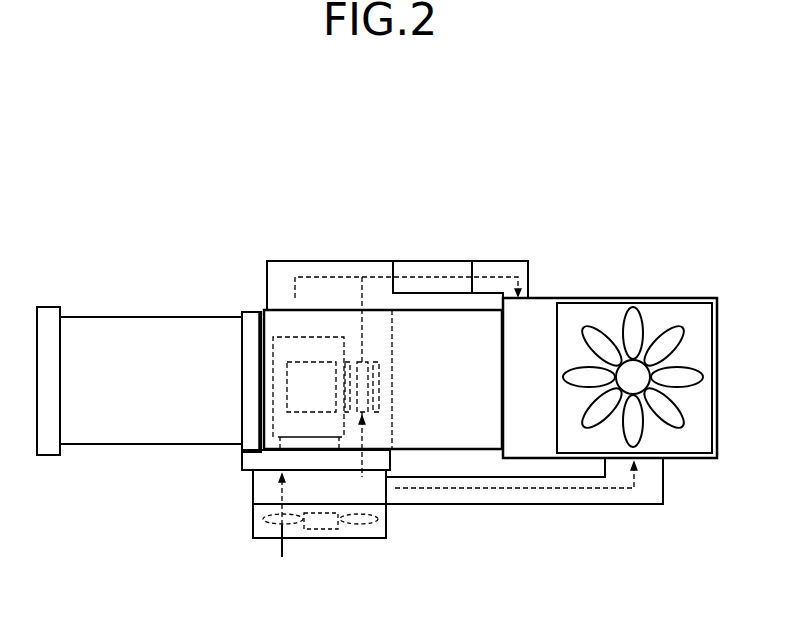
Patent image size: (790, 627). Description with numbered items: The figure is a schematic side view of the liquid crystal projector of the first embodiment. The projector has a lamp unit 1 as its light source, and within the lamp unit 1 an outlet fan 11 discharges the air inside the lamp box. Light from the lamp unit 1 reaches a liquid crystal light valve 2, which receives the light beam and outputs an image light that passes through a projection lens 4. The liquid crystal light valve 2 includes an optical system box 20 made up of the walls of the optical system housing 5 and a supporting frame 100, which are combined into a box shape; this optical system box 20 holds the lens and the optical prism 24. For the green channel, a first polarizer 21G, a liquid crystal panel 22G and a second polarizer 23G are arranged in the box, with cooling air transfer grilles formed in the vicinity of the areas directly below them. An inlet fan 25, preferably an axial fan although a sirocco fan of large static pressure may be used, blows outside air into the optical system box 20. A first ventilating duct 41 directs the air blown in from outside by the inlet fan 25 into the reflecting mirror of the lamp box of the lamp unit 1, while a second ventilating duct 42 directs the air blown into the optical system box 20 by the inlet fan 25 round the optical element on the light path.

The lamp unit 1 is at (617, 294).
The liquid crystal light valve 2 is at (320, 331).
The projection lens 4 is at (108, 323).
The housing of the optical system 5 is at (462, 450).
The outlet fan 11 is at (675, 417).
The optical system box 20 is at (260, 310).
The first polarizer for green 21G is at (347, 362).
The liquid crystal panel for green 22G is at (363, 378).
The second polarizer for green 23G is at (376, 395).
The optical prism 24 is at (287, 388).
The inlet fan 25 is at (362, 525).
The first ventilating duct 41 is at (518, 507).
The second ventilating duct 42 is at (423, 263).
The supporting frame 100 is at (263, 462).